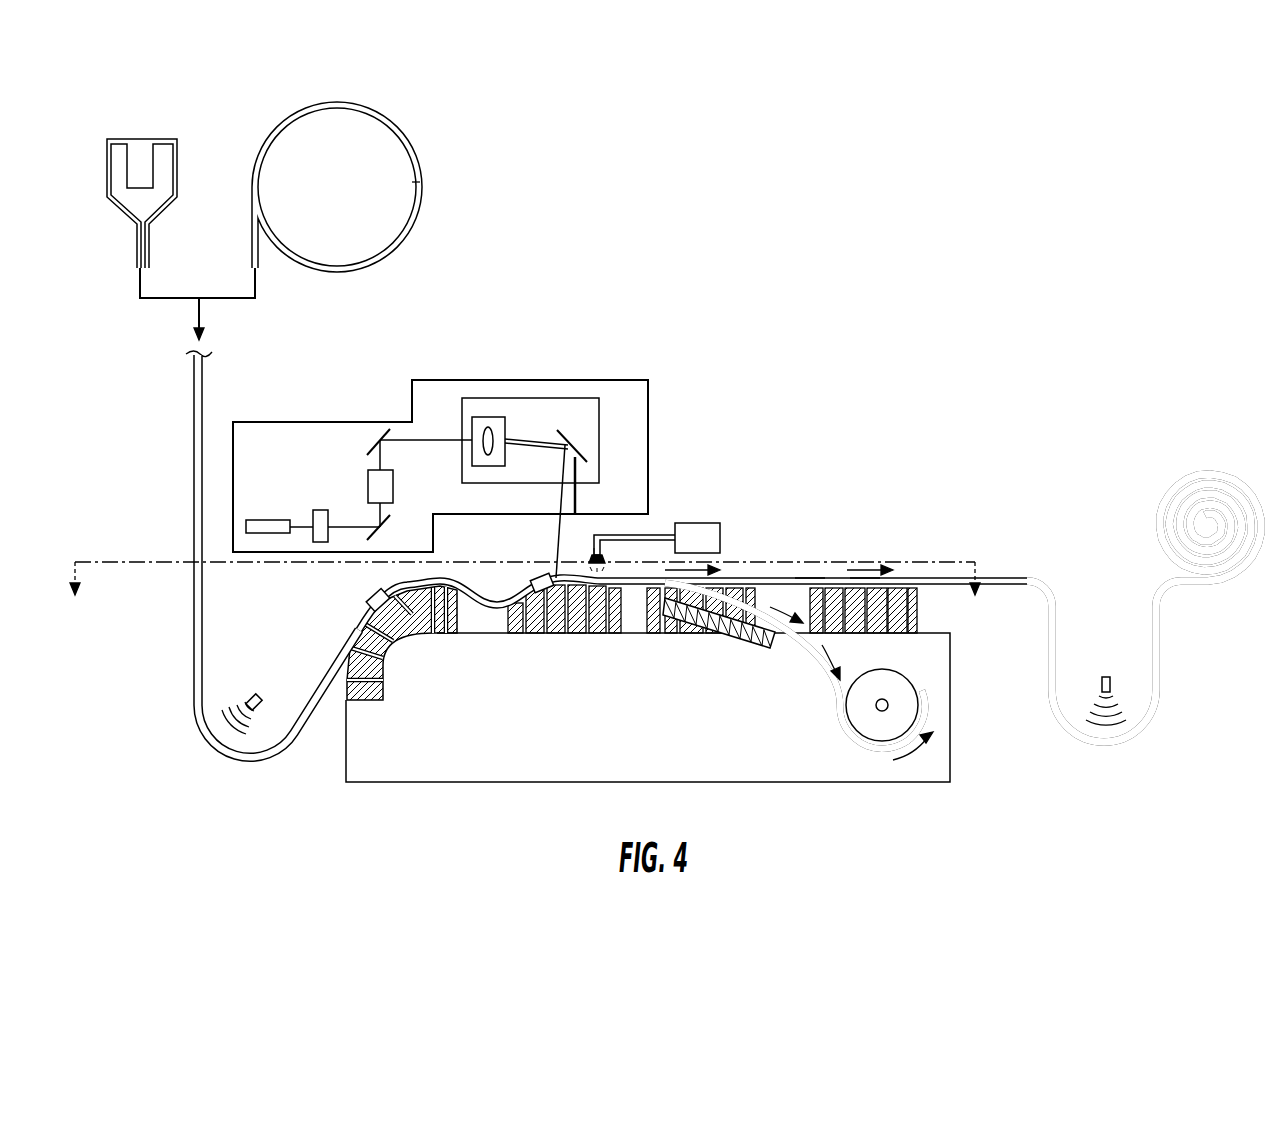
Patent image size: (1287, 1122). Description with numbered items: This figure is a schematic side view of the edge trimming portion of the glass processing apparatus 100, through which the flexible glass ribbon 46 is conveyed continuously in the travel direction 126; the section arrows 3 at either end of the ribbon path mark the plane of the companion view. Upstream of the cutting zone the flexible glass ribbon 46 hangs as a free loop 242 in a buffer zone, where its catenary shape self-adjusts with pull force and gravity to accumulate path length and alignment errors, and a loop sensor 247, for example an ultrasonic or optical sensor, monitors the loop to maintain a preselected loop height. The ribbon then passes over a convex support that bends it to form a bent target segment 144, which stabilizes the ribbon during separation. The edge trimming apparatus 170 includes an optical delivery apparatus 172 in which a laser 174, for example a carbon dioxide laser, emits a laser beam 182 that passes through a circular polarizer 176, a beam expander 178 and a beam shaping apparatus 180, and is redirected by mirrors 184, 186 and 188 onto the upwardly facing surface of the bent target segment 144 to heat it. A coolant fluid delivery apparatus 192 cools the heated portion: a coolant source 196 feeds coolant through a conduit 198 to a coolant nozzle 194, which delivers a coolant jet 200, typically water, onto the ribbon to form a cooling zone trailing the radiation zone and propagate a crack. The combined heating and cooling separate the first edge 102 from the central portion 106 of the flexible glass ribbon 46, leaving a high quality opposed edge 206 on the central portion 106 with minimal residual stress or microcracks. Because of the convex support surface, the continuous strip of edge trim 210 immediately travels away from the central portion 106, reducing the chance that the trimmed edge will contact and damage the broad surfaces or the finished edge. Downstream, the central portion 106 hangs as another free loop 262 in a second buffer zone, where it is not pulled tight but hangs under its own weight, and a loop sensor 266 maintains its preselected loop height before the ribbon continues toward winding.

The glass processing apparatus 100 is at (812, 282).
The first edge 102 is at (807, 652).
The central portion 106 is at (773, 578).
The travel direction 126 is at (862, 562).
The bent target segment 144 is at (540, 575).
The flexible glass ribbon 46 is at (446, 572).
The edge trimming apparatus 170 is at (582, 366).
The optical delivery apparatus 172 is at (691, 481).
The laser 174 is at (252, 520).
The circular polarizer 176 is at (320, 510).
The beam expander 178 is at (393, 486).
The beam shaping apparatus 180 is at (485, 417).
The laser beam 182 is at (300, 527).
The mirror 184 is at (376, 538).
The mirror 186 is at (378, 440).
The mirror 188 is at (560, 430).
The coolant fluid delivery apparatus 192 is at (718, 500).
The coolant nozzle 194 is at (600, 537).
The coolant source 196 is at (720, 540).
The conduit 198 is at (652, 535).
The coolant jet 200 is at (617, 578).
The opposed edge of central portion 206 is at (808, 578).
The continuous strip of edge trim 210 is at (825, 672).
The free loop 242 is at (184, 756).
The loop sensor 247 is at (260, 693).
The free loop 262 is at (1150, 769).
The loop sensor 266 is at (1104, 675).
The section line 3 is at (524, 600).